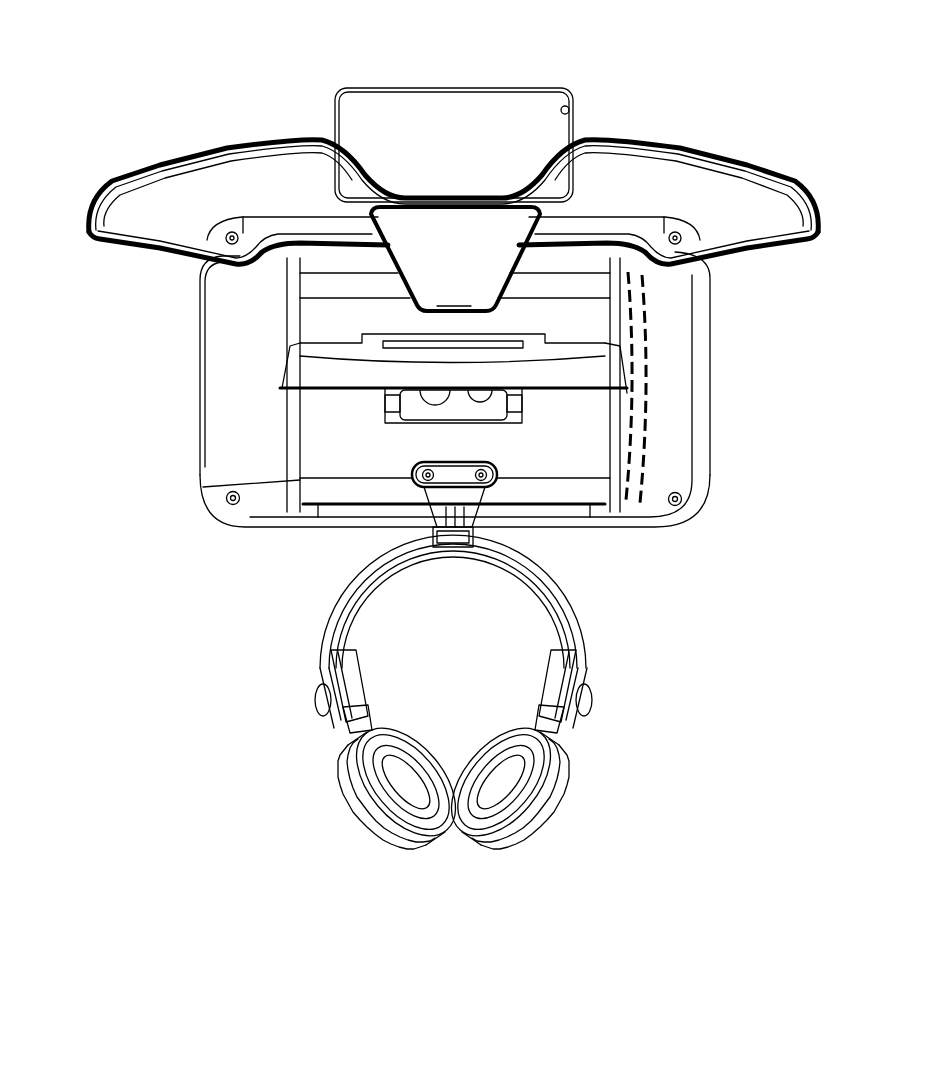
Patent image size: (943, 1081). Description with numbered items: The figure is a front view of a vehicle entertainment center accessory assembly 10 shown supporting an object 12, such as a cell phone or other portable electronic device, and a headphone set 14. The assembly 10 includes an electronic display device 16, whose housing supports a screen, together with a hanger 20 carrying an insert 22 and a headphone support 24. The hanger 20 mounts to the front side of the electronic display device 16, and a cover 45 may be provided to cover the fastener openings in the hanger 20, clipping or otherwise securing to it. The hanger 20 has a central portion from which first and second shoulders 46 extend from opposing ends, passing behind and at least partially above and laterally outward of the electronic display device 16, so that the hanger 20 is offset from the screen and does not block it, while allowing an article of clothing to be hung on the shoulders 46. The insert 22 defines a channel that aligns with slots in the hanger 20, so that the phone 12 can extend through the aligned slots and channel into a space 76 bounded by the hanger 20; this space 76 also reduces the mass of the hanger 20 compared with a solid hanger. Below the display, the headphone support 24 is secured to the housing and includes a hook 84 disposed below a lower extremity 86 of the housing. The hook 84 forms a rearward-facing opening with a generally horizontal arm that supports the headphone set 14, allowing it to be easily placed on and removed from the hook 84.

The vehicle entertainment center accessory assembly 10 is at (188, 46).
The object 12 is at (455, 106).
The headphone set 14 is at (583, 653).
The electronic display device 16 is at (683, 360).
The hanger 20 is at (426, 174).
The insert 22 is at (587, 136).
The headphone support 24 is at (455, 490).
The cover 45 is at (425, 281).
The shoulder portion 46 is at (140, 172).
The space 76 is at (260, 190).
The hook 84 is at (455, 547).
The lower extremity 86 is at (576, 524).